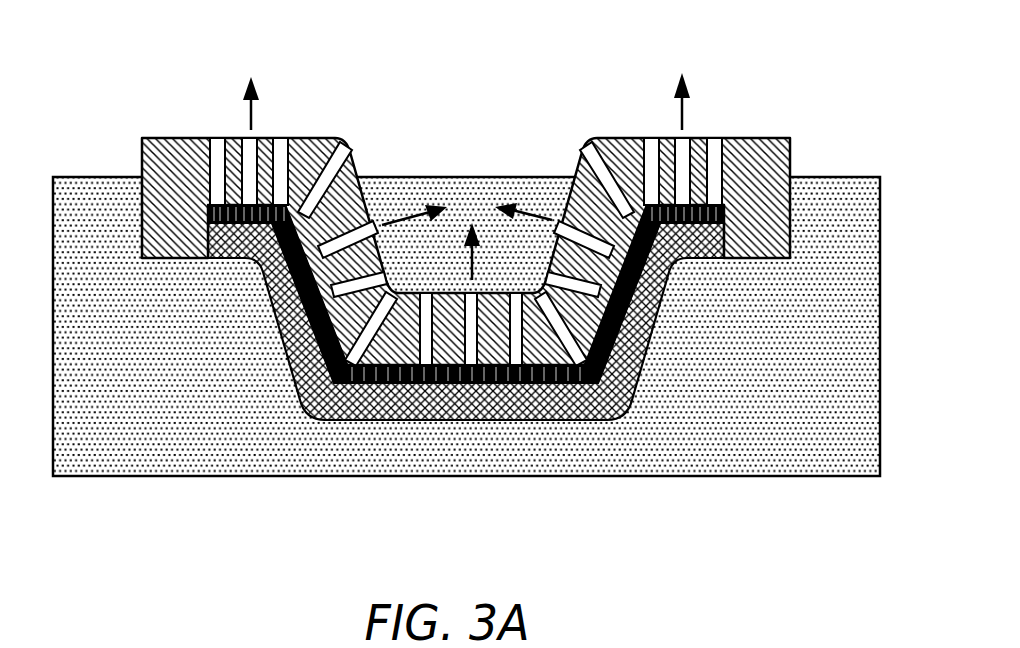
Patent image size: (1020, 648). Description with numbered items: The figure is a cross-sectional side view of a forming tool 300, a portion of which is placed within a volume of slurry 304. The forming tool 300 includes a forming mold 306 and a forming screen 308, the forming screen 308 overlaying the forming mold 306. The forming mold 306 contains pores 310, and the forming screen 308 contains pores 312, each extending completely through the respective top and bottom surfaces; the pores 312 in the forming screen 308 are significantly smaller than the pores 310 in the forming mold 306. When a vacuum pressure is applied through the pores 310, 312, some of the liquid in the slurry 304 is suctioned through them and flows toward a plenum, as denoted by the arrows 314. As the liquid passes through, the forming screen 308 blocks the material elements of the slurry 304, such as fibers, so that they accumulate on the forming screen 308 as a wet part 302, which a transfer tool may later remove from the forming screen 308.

The forming tool 300 is at (442, 301).
The wet part 302 is at (402, 425).
The slurry 304 is at (167, 435).
The forming mold 306 is at (755, 137).
The forming screen 308 is at (613, 353).
The pores 310 is at (588, 138).
The pores 312 is at (537, 383).
The arrows 314 is at (252, 106).